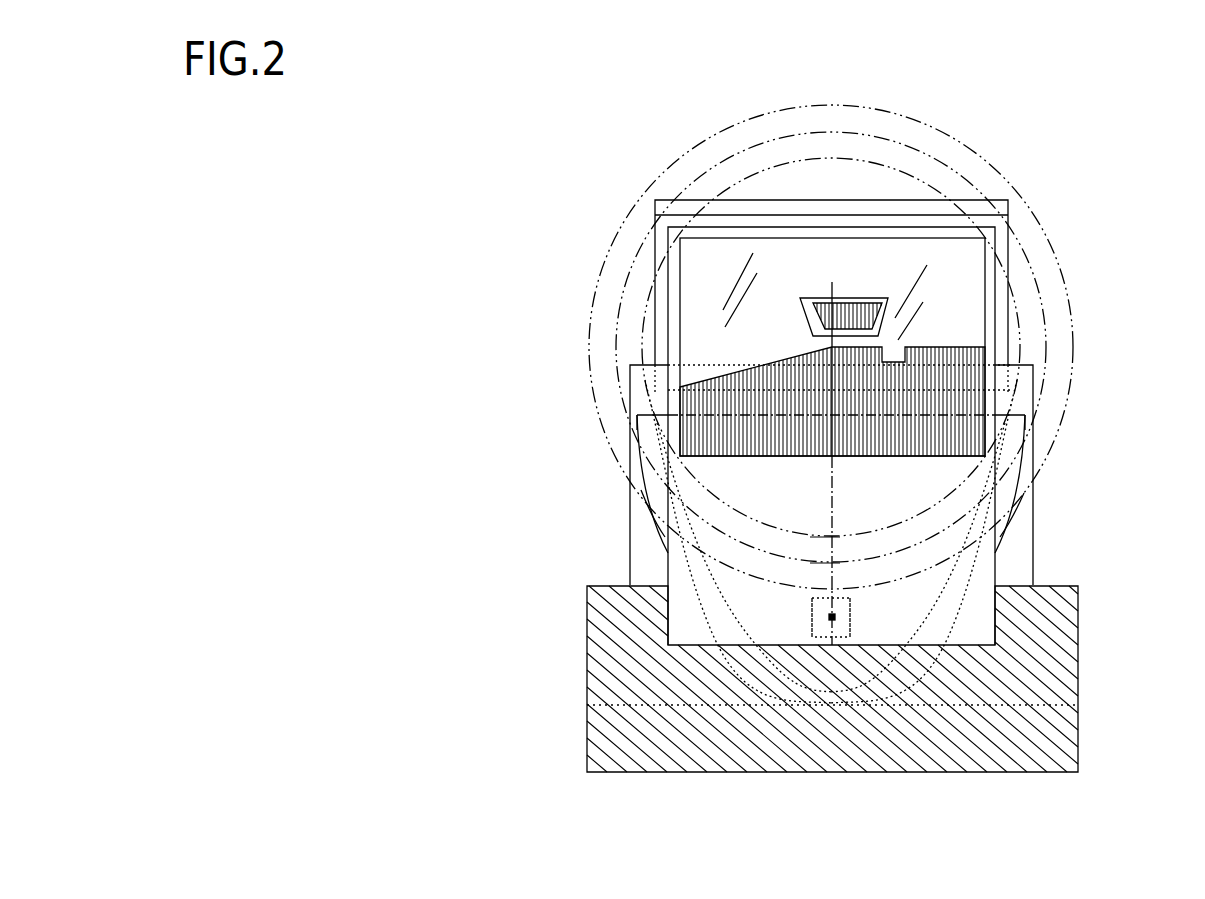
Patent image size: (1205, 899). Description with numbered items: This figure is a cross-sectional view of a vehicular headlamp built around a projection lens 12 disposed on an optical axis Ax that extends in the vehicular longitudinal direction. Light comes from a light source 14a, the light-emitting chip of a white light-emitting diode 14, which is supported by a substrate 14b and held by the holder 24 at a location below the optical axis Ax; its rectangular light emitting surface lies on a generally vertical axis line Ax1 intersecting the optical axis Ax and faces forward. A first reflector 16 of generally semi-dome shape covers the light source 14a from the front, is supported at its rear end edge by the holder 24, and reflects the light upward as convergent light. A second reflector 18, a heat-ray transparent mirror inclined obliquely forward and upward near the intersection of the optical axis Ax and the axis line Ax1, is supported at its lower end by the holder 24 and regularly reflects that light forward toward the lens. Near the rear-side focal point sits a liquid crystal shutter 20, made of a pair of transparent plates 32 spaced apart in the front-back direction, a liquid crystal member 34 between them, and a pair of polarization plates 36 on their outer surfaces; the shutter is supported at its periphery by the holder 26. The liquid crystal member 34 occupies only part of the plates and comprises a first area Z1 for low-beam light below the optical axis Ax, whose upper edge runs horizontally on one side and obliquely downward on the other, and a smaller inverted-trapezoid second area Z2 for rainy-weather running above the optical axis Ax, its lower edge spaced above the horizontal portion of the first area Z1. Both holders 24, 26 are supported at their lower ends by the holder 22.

The projection lens 12 is at (628, 262).
The white light-emitting diode 14 is at (843, 597).
The light source 14a is at (812, 607).
The substrate 14b is at (860, 607).
The first reflector 16 is at (1022, 463).
The second reflector 18 is at (910, 198).
The liquid crystal shutter 20 is at (988, 262).
The holder 22 is at (585, 347).
The holder 24 is at (640, 528).
The holder 26 is at (918, 500).
The transparent plate 32 is at (813, 262).
The liquid crystal member 34 is at (812, 310).
The polarization plate 36 is at (850, 306).
The optical axis Ax is at (832, 347).
The axis line Ax1 is at (832, 474).
The first area Z1 is at (985, 353).
The second area Z2 is at (868, 298).